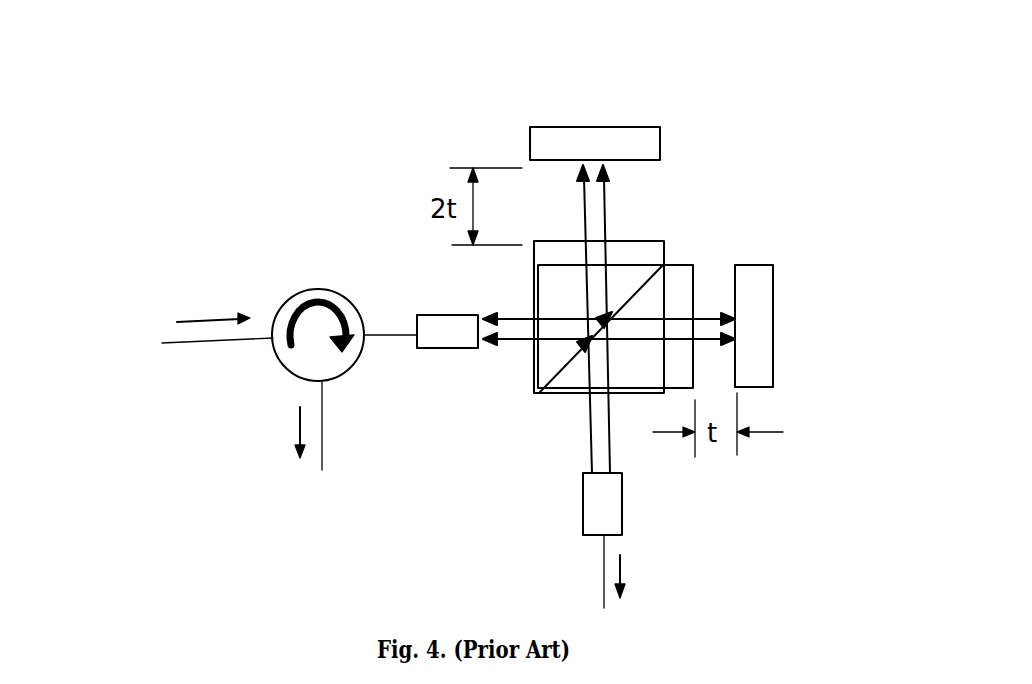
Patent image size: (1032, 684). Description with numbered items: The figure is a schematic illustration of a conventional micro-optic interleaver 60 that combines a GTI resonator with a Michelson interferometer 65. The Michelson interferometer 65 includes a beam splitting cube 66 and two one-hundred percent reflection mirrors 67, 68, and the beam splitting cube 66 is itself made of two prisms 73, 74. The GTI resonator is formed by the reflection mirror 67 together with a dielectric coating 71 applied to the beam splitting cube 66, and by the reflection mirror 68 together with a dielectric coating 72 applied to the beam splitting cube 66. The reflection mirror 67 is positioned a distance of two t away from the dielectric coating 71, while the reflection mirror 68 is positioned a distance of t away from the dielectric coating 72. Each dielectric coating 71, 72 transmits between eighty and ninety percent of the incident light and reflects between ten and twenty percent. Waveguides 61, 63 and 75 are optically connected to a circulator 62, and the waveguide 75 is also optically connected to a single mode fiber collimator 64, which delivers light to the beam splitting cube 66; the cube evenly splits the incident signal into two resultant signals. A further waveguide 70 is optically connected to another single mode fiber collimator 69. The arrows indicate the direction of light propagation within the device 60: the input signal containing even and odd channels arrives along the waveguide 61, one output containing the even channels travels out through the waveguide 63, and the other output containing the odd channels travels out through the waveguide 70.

The micro-optic interleaver 60 is at (317, 70).
The waveguide 61 is at (202, 350).
The circulator 62 is at (342, 297).
The waveguide 63 is at (322, 447).
The single mode fiber collimator 64 is at (440, 348).
The Michelson interferometer 65 is at (557, 370).
The beam splitting cube 66 is at (570, 400).
The one-hundred percent reflection mirror 67 is at (642, 127).
The one-hundred percent reflection mirror 68 is at (773, 300).
The single mode fiber collimator 69 is at (622, 513).
The waveguide 70 is at (603, 572).
The dielectric coating 71 is at (665, 247).
The dielectric coating 72 is at (680, 265).
The prism 73 is at (622, 395).
The prism 74 is at (545, 405).
The waveguide 75 is at (387, 337).